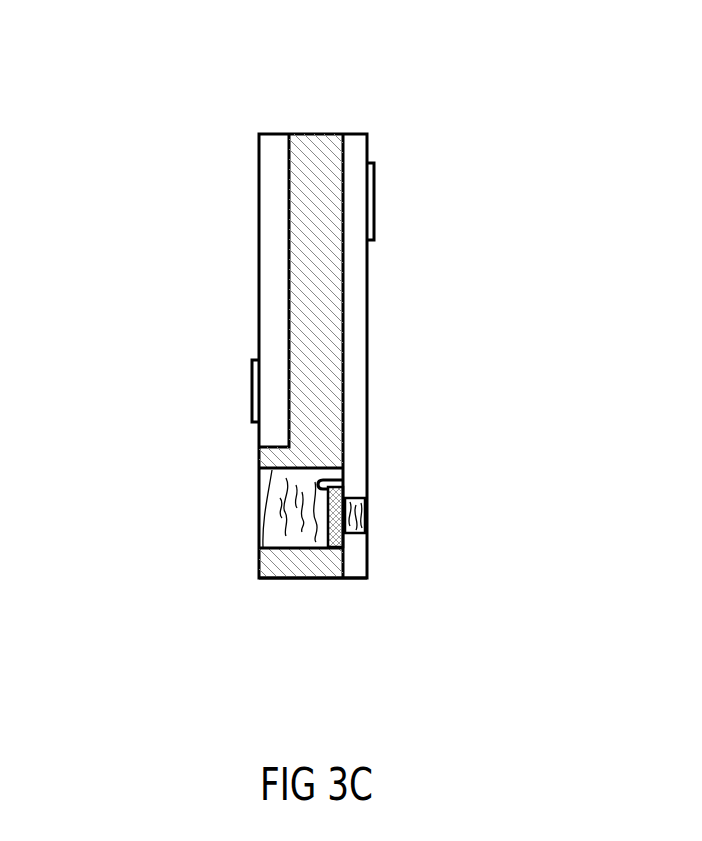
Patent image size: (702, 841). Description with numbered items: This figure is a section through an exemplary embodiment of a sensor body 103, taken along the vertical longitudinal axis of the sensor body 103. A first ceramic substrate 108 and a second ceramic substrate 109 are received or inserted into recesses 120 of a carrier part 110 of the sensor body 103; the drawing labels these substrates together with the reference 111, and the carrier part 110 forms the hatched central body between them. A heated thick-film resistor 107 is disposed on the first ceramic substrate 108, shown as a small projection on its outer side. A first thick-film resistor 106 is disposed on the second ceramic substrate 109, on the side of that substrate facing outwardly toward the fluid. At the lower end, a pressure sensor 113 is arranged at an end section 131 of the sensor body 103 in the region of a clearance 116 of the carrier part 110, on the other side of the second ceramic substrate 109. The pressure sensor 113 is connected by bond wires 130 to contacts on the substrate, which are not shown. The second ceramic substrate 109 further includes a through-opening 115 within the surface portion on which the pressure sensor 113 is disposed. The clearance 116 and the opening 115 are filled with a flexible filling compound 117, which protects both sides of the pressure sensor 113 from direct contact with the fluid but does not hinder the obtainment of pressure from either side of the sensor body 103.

The sensor body 103 is at (362, 104).
The recesses 120 is at (265, 131).
The carrier part 110 is at (323, 130).
The side walls 111 is at (309, 356).
The first ceramic substrate 108 is at (257, 143).
The second ceramic substrate 109 is at (370, 146).
The first thick-film resistor 106 is at (377, 204).
The heated thick-film resistor 107 is at (249, 389).
The bond wires 130 is at (338, 474).
The through-opening 115 is at (371, 508).
The flexible filling compound 117 is at (268, 505).
The pressure sensor 113 is at (321, 505).
The clearance 116 is at (256, 543).
The end section 131 is at (283, 589).